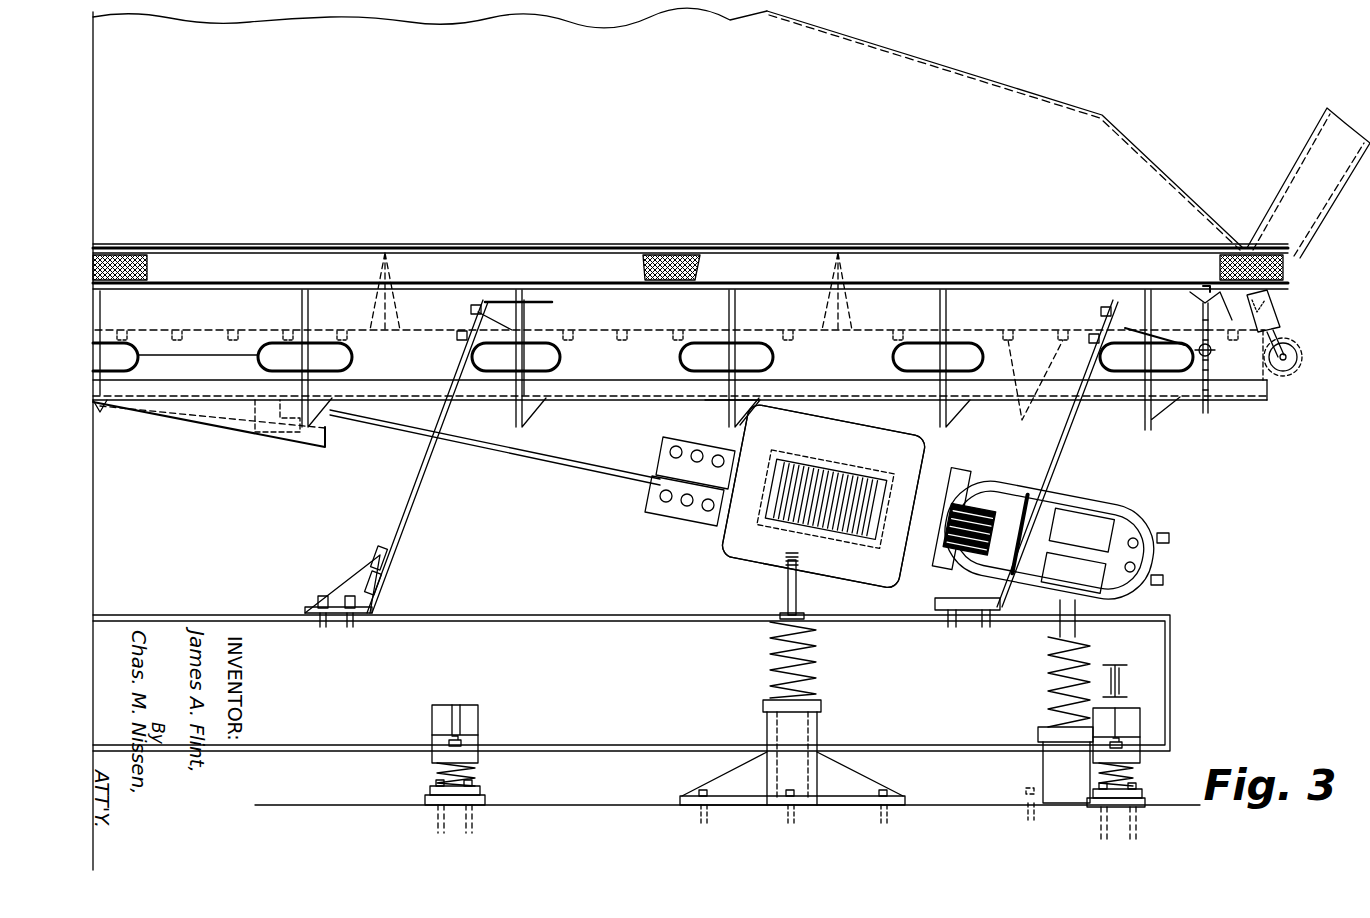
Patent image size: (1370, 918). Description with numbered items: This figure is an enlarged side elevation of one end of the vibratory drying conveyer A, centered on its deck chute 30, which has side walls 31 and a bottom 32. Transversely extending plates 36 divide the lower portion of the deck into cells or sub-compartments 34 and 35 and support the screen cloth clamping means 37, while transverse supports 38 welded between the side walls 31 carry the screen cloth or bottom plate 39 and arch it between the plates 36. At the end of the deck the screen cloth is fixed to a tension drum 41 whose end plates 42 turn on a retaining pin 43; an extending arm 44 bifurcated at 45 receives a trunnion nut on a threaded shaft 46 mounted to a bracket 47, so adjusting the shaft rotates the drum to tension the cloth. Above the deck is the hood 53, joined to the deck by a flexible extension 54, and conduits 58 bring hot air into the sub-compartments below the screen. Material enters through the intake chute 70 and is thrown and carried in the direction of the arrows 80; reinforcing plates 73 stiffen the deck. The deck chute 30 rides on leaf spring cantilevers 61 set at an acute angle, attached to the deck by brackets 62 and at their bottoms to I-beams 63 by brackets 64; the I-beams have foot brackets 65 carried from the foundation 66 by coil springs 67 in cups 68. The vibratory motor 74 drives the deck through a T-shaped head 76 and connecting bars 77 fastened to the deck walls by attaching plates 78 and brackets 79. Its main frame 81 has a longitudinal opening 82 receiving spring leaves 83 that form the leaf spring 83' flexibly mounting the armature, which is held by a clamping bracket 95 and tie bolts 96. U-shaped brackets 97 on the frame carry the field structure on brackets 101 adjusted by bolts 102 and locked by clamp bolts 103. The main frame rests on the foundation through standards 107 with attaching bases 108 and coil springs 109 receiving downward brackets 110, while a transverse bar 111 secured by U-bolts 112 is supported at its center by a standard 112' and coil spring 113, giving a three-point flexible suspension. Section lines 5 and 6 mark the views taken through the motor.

The deck chute 30 is at (579, 302).
The side walls 31 is at (623, 305).
The bottom 32 is at (625, 392).
The cells or sub-compartments 34 is at (665, 368).
The cells or sub-compartments 35 is at (1073, 360).
The transversely extending plates 36 is at (468, 330).
The screen cloth clamping means 37 is at (400, 328).
The screen cloth or bottom plate supports 38 is at (616, 342).
The screen cloth or bottom plate 39 is at (372, 328).
The tension drums 41 is at (1298, 375).
The end plates 42 is at (1253, 358).
The retaining pin 43 is at (1292, 347).
The extending arm 44 is at (1240, 358).
The bifurcated portion 45 is at (1200, 356).
The threaded shaft 46 is at (1208, 417).
The bracket 47 is at (1238, 300).
The hood 53 is at (997, 105).
The flexible extension 54 is at (208, 262).
The conduits 58 is at (340, 388).
The leaf spring cantilevers 61 is at (410, 503).
The brackets 62 is at (510, 300).
The I-beams 63 is at (530, 640).
The brackets 64 is at (395, 583).
The transverse foot brackets 65 is at (440, 752).
The foundation 66 is at (570, 805).
The coil springs 67 is at (462, 780).
The cups 68 is at (482, 797).
The intake chute 70 is at (1325, 135).
The reinforcing plates 73 is at (300, 302).
The vibratory motor 74 is at (720, 562).
The T-shaped head 76 is at (673, 503).
The connecting bars 77 is at (523, 455).
The attaching plates 78 is at (205, 410).
The brackets 79 is at (283, 400).
The arrows 80 is at (910, 223).
The main frame 81 is at (750, 540).
The longitudinally extending opening 82 is at (852, 452).
The spring leaves 83 is at (825, 482).
The leaf spring 83' is at (892, 436).
The clamping bracket 95 is at (952, 500).
The tie bolts 96 is at (950, 582).
The U-shaped brackets 97 is at (1122, 490).
The brackets 101 is at (1082, 505).
The adjustable bolts 102 is at (1140, 544).
The clamp bolts 103 is at (1148, 570).
The standards 107 is at (767, 725).
The attaching bases 108 is at (858, 792).
The coil springs 109 is at (770, 665).
The brackets 110 is at (786, 600).
The transverse bar 111 is at (1005, 615).
The U-bolts 112 is at (1017, 635).
The standard 112' is at (1034, 773).
The coil spring 113 is at (1045, 685).
The section line 5 is at (628, 458).
The section line 6 is at (1096, 601).
The vibratory drying conveyer A is at (1103, 98).